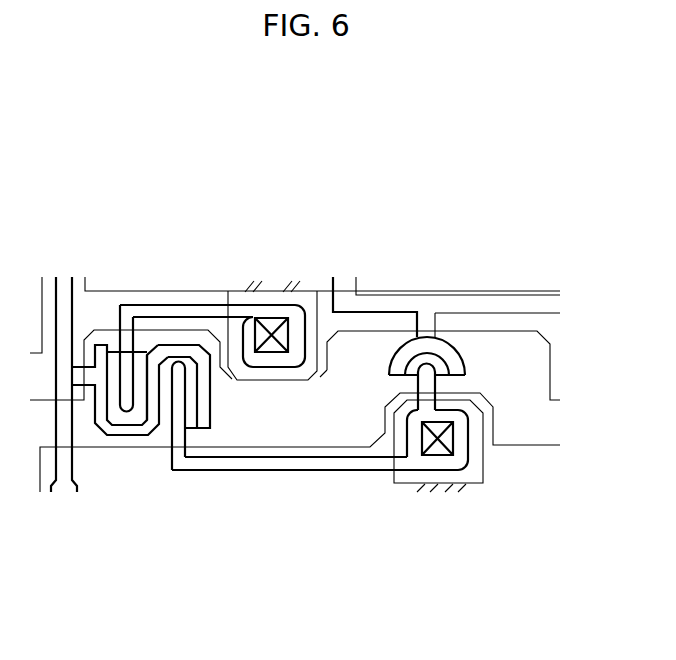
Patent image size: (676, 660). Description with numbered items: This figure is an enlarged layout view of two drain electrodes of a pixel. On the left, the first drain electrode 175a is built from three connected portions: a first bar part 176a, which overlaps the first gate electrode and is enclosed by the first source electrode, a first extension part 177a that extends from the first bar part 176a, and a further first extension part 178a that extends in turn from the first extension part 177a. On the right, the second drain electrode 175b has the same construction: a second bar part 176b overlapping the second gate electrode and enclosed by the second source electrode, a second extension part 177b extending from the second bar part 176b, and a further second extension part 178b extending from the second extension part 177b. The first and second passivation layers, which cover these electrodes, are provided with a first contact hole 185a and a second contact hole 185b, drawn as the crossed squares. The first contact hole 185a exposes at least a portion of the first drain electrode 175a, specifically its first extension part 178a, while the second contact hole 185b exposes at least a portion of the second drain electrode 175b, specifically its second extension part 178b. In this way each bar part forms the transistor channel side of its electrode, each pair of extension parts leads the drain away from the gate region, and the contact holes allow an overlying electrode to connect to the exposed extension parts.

The first drain electrode 175a is at (70, 193).
The first bar part 176a is at (120, 378).
The first extension part 177a is at (158, 303).
The first extension part 178a is at (268, 307).
The first contact hole 185a is at (273, 318).
The second drain electrode 175b is at (192, 585).
The second bar part 176b is at (185, 402).
The second extension part 177b is at (306, 470).
The second extension part 178b is at (440, 470).
The second contact hole 185b is at (453, 448).